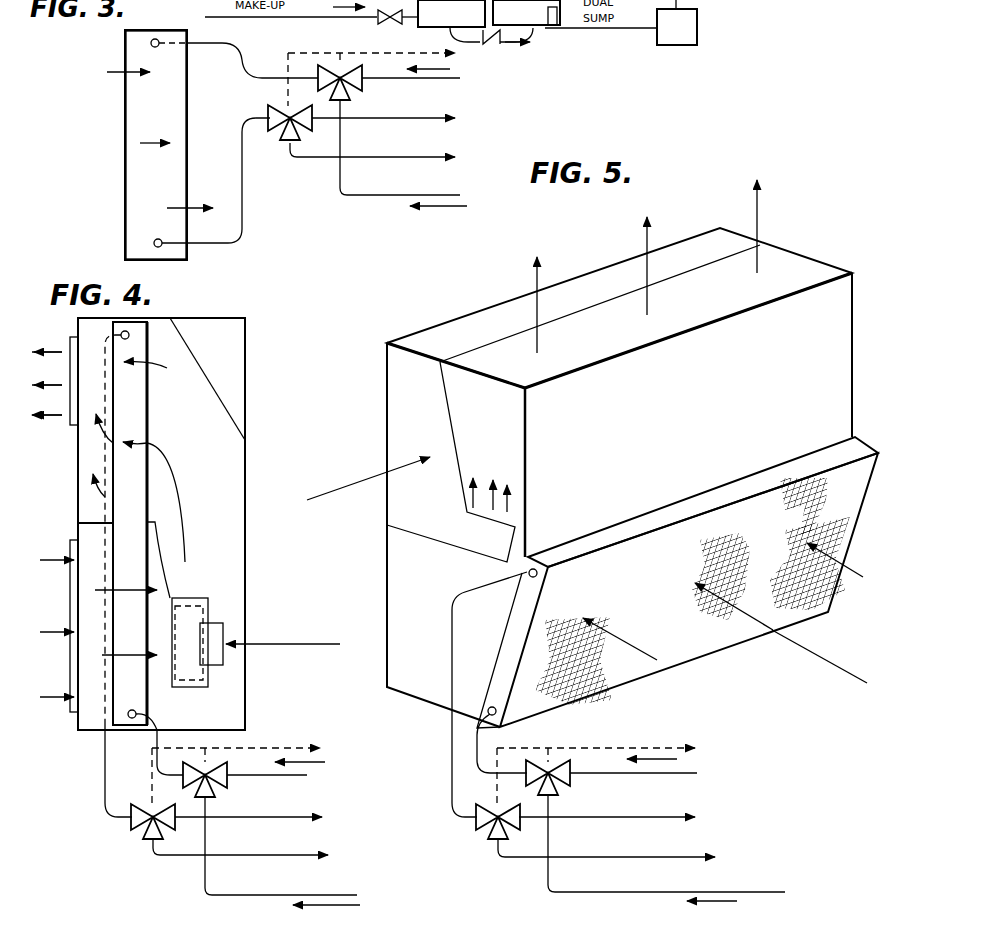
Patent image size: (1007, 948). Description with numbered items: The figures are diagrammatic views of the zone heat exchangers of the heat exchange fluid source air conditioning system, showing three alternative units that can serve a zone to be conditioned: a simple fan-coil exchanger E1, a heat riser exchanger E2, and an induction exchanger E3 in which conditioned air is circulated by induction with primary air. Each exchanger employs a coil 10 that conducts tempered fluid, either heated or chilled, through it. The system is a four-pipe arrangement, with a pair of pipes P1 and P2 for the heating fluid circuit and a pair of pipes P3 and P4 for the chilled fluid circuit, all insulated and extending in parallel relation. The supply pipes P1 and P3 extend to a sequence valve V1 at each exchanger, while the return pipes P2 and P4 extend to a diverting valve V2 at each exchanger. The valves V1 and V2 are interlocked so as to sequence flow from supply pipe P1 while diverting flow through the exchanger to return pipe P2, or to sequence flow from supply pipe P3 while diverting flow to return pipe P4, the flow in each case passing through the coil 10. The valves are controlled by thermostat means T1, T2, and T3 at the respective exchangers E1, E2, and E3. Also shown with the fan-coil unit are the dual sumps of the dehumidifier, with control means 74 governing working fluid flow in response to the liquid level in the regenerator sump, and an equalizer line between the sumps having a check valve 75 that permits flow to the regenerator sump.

In FIG. 3, the coil 10 is at (156, 145).
In FIG. 4, the coil 10 is at (125, 503).
In FIG. 5, the coil 10 is at (677, 590).
In FIG. 3, the control means 74 is at (677, 22).
In FIG. 3, the check valve 75 is at (503, 44).
In FIG. 3, the fan-coil exchanger E1 is at (126, 160).
In FIG. 4, the heat riser exchanger E2 is at (266, 360).
In FIG. 5, the induction exchanger E3 is at (500, 302).
In FIG. 3, the sequence valve V1 is at (372, 40).
In FIG. 4, the sequence valve V1 is at (213, 770).
In FIG. 5, the sequence valve V1 is at (557, 760).
In FIG. 3, the diverting valve V2 is at (274, 134).
In FIG. 4, the diverting valve V2 is at (143, 832).
In FIG. 5, the diverting valve V2 is at (490, 830).
In FIG. 3, the thermostat means T1 is at (390, 74).
In FIG. 4, the thermostat means T2 is at (255, 773).
In FIG. 5, the thermostat means T3 is at (612, 773).
In FIG. 3, the supply pipe P1 is at (417, 154).
In FIG. 4, the supply pipe P1 is at (299, 851).
In FIG. 5, the supply pipe P1 is at (684, 850).
In FIG. 3, the return pipe P2 is at (392, 156).
In FIG. 4, the return pipe P2 is at (261, 854).
In FIG. 5, the return pipe P2 is at (627, 854).
In FIG. 3, the supply pipe P3 is at (429, 77).
In FIG. 4, the supply pipe P3 is at (284, 776).
In FIG. 5, the supply pipe P3 is at (650, 774).
In FIG. 3, the return pipe P4 is at (403, 118).
In FIG. 4, the return pipe P4 is at (267, 817).
In FIG. 5, the return pipe P4 is at (627, 817).